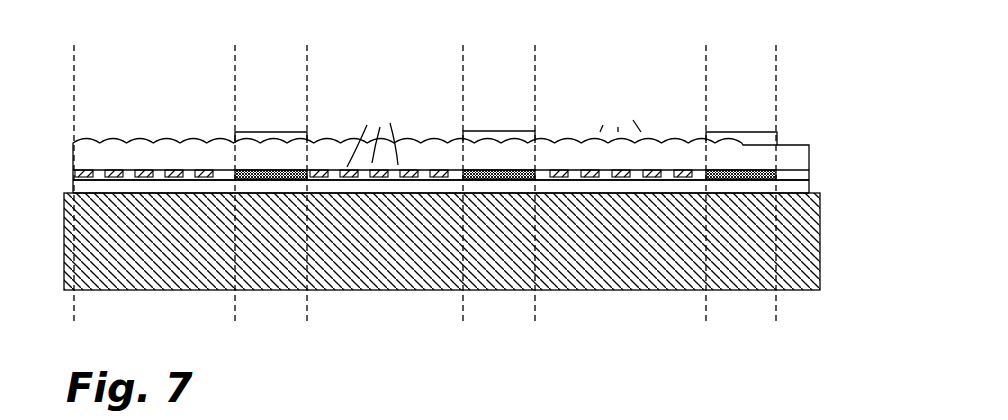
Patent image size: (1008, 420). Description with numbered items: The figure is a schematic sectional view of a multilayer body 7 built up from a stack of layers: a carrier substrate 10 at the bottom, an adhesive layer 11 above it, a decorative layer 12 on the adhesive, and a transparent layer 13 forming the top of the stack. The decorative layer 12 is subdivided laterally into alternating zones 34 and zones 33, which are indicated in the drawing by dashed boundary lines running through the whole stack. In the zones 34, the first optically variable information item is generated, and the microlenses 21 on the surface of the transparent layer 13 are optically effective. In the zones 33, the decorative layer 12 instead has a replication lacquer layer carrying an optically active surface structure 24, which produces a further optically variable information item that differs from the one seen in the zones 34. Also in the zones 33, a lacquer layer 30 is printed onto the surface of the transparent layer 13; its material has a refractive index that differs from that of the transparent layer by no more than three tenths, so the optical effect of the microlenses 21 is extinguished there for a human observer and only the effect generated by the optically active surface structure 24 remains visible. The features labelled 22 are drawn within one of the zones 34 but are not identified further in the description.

The multilayer body 7 is at (807, 89).
The carrier substrate 10 is at (820, 245).
The adhesive layer 11 is at (813, 187).
The decorative layer 12 is at (815, 174).
The transparent layer 13 is at (810, 153).
The microlenses 21 is at (620, 118).
The openings 22 is at (372, 137).
The optically active surface structure 24 is at (245, 167).
The lacquer layer 30 is at (785, 138).
The zones 33 is at (505, 184).
The zones 34 is at (348, 183).